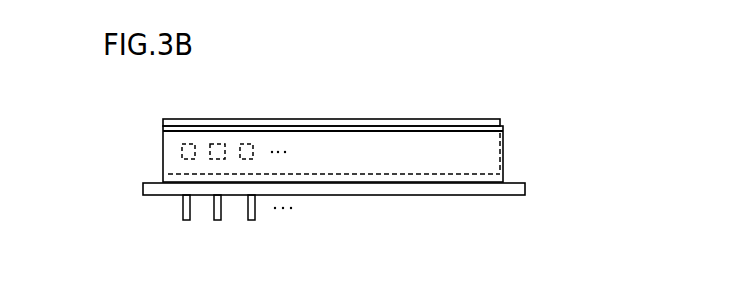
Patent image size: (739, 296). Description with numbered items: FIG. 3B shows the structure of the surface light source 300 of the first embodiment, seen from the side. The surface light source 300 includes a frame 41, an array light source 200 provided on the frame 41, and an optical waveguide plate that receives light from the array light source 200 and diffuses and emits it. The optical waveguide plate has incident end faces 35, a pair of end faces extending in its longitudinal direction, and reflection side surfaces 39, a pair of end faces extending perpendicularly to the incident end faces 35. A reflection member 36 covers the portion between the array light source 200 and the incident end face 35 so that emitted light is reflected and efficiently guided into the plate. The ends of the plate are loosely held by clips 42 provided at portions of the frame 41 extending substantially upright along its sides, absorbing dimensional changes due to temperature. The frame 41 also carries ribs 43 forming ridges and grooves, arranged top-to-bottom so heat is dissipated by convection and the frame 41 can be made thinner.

The surface light source 300 is at (532, 72).
The clip 42 is at (170, 119).
The reflection member 36 is at (166, 129).
The incident end face 35 is at (453, 152).
The reflection side surface 39 is at (165, 152).
The array light source 200 is at (488, 162).
The frame 41 is at (493, 192).
The rib 43 is at (183, 207).